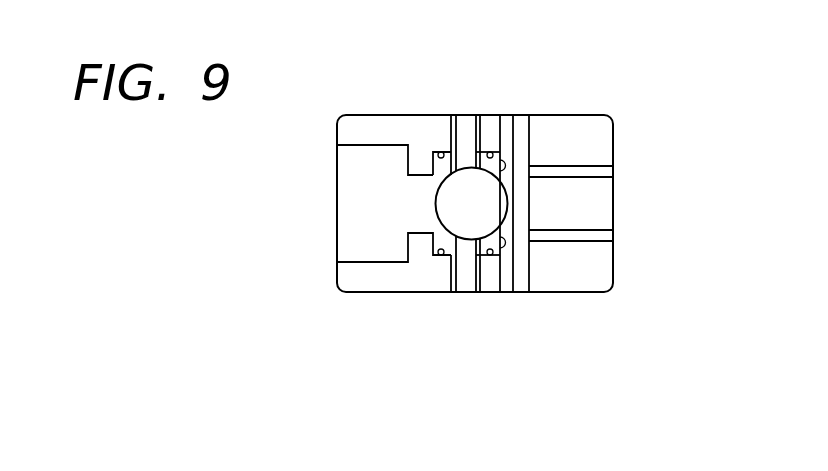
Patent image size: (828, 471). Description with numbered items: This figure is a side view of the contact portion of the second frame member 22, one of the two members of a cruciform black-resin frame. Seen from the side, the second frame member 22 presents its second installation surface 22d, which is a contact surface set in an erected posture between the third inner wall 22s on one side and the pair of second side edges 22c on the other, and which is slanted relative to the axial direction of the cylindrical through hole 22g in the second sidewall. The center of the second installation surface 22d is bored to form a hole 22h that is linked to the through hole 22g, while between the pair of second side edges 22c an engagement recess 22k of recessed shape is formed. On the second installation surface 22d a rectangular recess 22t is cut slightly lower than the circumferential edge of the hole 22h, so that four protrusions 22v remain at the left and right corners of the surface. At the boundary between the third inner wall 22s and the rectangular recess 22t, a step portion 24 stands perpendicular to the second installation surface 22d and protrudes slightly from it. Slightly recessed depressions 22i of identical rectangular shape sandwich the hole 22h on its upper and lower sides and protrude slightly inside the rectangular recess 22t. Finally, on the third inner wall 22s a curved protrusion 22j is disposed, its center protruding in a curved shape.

The second frame member 22 is at (556, 117).
The second side edges 22c is at (343, 124).
The engagement recess 22k is at (350, 160).
The hole 22h is at (432, 152).
The rectangular recess 22t is at (434, 255).
The protrusions 22v is at (440, 151).
The depressions 22i is at (462, 137).
The through hole 22g is at (489, 141).
The second installation surface 22d is at (478, 263).
The step portion 24 is at (494, 150).
The third inner wall 22s is at (582, 145).
The curved protrusion 22j is at (597, 190).